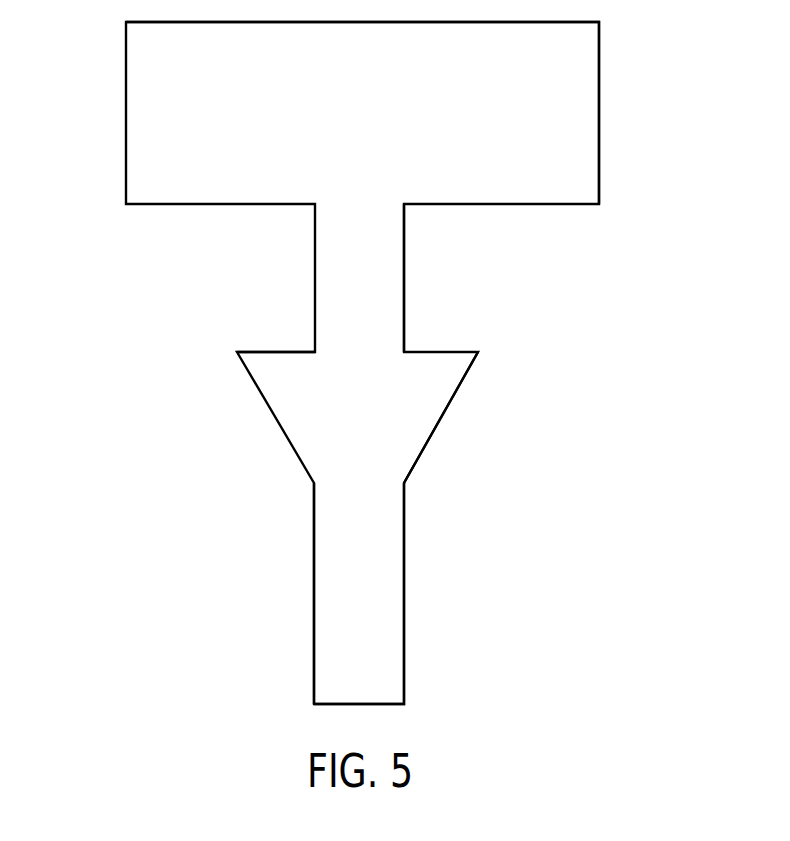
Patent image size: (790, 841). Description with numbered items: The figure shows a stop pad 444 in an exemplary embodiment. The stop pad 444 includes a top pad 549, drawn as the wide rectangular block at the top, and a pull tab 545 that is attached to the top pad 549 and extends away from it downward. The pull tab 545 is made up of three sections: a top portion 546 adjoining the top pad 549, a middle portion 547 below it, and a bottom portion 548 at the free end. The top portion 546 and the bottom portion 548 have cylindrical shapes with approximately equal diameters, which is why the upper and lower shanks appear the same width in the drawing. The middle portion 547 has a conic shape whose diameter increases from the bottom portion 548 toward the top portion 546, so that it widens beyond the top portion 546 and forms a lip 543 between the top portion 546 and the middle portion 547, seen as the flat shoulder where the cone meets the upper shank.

The stop pad 444 is at (126, 116).
The top pad 549 is at (599, 110).
The top portion 546 is at (404, 278).
The lip 543 is at (270, 350).
The middle portion 547 is at (441, 418).
The pull tab 545 is at (313, 529).
The bottom portion 548 is at (404, 593).